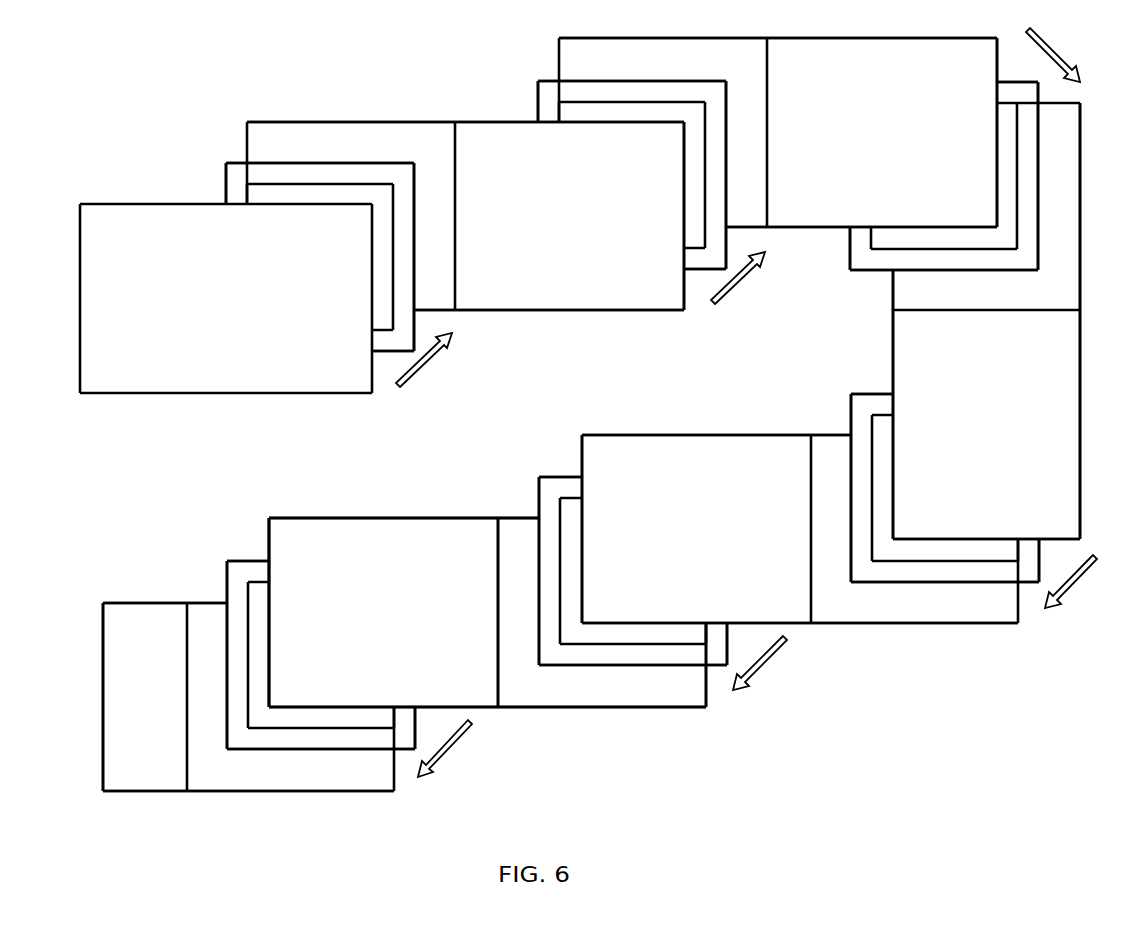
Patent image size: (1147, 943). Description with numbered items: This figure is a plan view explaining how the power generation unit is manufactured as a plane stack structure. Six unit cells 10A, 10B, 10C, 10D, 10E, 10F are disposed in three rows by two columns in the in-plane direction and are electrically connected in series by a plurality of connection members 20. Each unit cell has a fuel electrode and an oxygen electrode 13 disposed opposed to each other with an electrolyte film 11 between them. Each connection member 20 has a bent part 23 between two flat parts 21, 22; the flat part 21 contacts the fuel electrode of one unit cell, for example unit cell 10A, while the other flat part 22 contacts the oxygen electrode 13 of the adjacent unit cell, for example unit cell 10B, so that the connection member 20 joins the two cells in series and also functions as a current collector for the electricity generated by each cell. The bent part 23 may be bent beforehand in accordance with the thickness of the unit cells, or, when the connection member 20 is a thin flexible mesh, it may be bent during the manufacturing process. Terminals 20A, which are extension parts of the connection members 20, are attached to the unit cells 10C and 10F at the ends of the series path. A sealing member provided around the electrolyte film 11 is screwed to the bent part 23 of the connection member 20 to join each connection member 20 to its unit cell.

The unit cell 10A is at (219, 543).
The unit cell 10B is at (530, 458).
The unit cell 10C is at (843, 384).
The unit cell 10D is at (837, 278).
The unit cell 10E is at (528, 63).
The unit cell 10F is at (215, 145).
The electrolyte film 11 is at (235, 572).
The oxygen electrode 13 is at (262, 597).
The connection member 20 is at (155, 409).
The terminal 20A is at (109, 212).
The flat part 21 is at (482, 697).
The flat part 22 is at (563, 697).
The bent part 23 is at (499, 682).